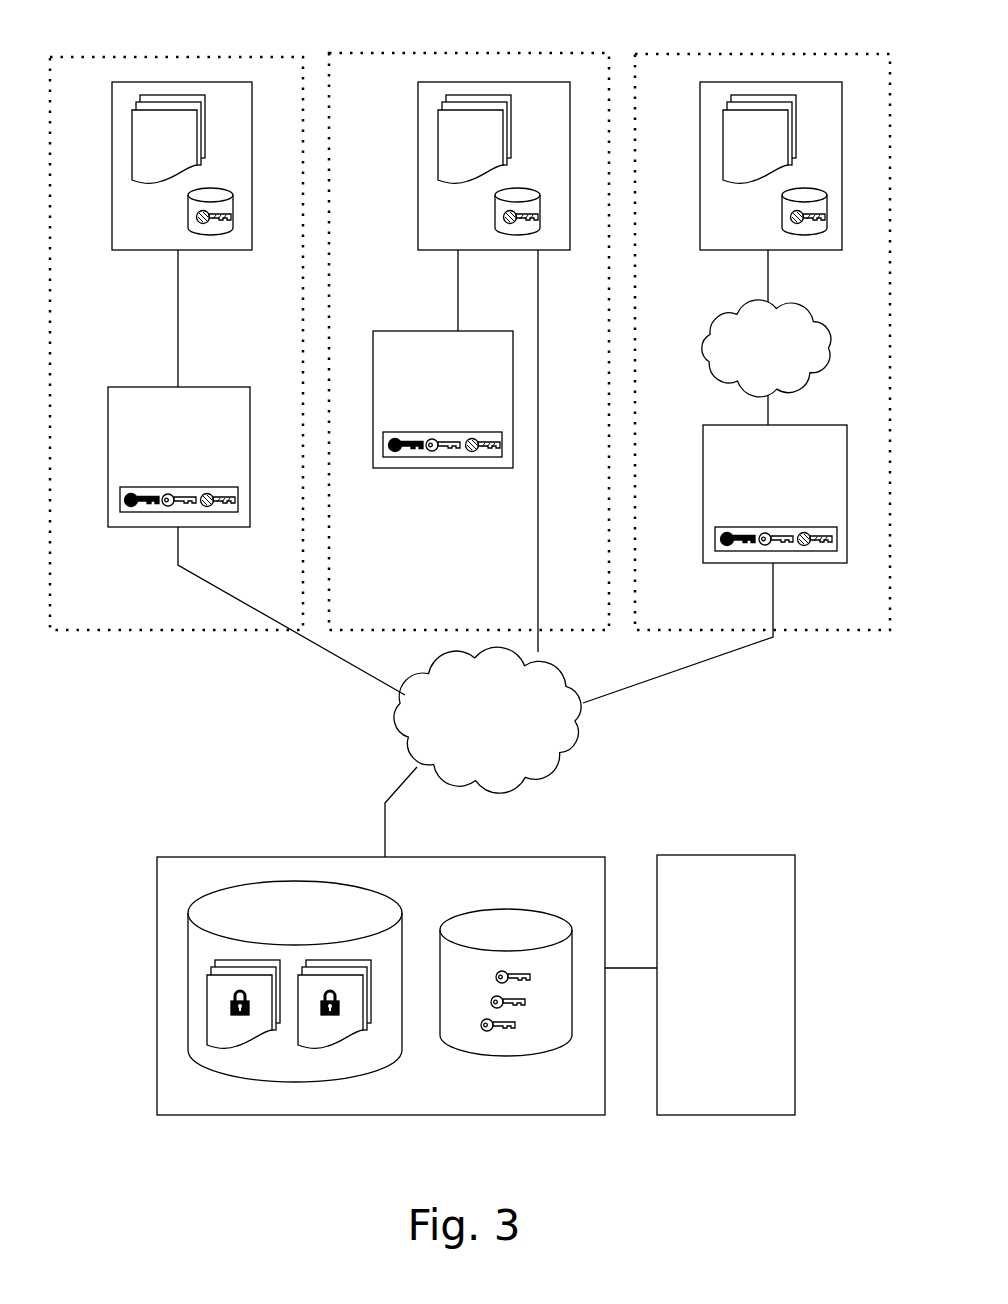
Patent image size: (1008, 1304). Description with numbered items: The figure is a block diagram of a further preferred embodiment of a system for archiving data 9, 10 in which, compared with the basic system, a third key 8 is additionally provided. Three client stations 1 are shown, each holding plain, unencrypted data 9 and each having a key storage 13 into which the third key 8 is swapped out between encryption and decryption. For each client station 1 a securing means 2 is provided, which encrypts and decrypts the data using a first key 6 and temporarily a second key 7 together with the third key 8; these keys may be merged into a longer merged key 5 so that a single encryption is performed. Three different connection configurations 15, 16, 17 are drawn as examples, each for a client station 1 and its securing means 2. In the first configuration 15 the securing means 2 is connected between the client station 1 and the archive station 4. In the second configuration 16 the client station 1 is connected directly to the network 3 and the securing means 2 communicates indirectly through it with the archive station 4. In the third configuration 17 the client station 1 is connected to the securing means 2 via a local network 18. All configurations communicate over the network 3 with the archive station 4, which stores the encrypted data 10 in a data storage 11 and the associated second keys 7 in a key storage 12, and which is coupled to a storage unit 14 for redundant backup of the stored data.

The client station 1 is at (112, 228).
The securing means 2 is at (108, 412).
The network 3 is at (570, 743).
The archive station 4 is at (268, 857).
The merged key 5 is at (120, 500).
The first key 6 is at (147, 510).
The second key 7 is at (170, 512).
The third key 8 is at (208, 222).
The plain data 9 is at (132, 160).
The encrypted data 10 is at (240, 1046).
The data storage 11 is at (217, 893).
The key storage 12 is at (525, 1052).
The key storage 13 is at (233, 200).
The storage unit 14 is at (770, 853).
The first configuration 15 is at (203, 57).
The second configuration 16 is at (490, 55).
The third configuration 17 is at (780, 55).
The local network 18 is at (815, 372).